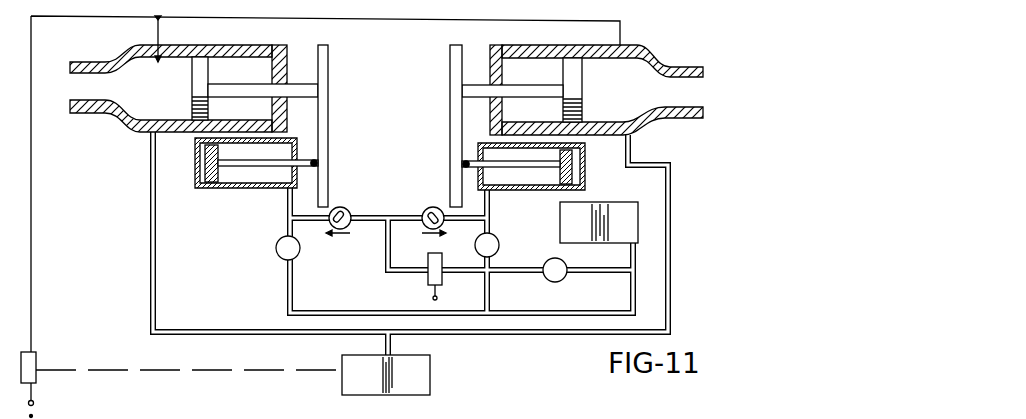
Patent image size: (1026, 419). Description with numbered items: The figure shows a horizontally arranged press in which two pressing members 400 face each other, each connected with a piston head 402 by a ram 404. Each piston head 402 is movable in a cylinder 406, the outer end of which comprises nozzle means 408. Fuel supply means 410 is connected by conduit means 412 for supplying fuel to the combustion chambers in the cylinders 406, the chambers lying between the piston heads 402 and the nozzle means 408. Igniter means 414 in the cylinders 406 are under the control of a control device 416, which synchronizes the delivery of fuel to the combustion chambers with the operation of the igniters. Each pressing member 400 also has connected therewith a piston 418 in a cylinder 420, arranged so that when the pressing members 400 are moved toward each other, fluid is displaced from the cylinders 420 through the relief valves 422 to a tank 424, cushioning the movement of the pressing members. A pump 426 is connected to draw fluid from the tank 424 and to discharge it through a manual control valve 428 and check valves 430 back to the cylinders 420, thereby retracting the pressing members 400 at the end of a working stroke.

The pressing member 400 is at (450, 80).
The piston head 402 is at (192, 87).
The ram 404 is at (253, 80).
The cylinder 406 is at (600, 56).
The nozzle means 408 is at (687, 85).
The fuel supply means 410 is at (430, 372).
The conduit means 412 is at (503, 340).
The igniter means 414 is at (618, 69).
The control device 416 is at (36, 362).
The piston 418 is at (214, 186).
The cylinder 420 is at (245, 188).
The relief valve 422 is at (278, 258).
The tank 424 is at (628, 228).
The pump 426 is at (562, 281).
The manual control valve 428 is at (428, 281).
The check valve 430 is at (428, 208).